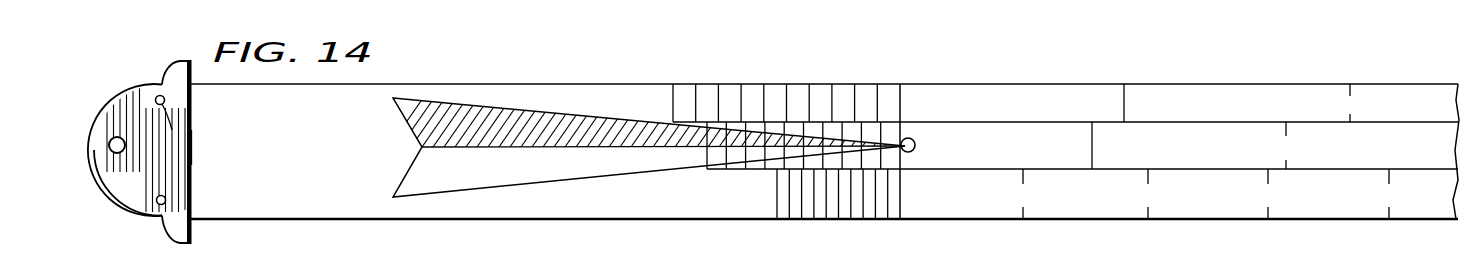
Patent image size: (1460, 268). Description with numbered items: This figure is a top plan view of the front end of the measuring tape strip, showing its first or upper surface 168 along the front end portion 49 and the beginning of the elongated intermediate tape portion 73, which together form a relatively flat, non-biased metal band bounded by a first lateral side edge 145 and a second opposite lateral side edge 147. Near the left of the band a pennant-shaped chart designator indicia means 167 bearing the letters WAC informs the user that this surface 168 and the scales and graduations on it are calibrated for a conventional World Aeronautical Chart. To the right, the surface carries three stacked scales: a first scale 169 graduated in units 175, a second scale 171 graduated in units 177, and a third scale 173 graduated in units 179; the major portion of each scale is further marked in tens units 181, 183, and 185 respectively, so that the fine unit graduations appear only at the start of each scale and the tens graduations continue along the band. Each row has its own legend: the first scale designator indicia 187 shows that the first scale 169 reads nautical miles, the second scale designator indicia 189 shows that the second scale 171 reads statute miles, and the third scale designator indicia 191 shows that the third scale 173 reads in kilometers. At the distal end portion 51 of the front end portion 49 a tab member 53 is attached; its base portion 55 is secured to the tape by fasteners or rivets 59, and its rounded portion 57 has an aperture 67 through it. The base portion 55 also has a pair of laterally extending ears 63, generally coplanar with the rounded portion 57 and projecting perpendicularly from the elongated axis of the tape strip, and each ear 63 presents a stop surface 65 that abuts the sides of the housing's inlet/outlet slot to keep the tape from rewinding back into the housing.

The front end portion 49 is at (825, 153).
The distal end portion 51 is at (192, 146).
The tab member 53 is at (130, 80).
The base portion 55 is at (192, 107).
The rounded portion 57 is at (137, 192).
The fasteners or rivets 59 is at (160, 196).
The laterally extending ears 63 is at (157, 73).
The stop surface 65 is at (193, 70).
The aperture 67 is at (113, 138).
The elongated intermediate tape portion 73 is at (1178, 78).
The first lateral side edge 145 is at (571, 66).
The second lateral side edge 147 is at (519, 221).
The chart designator indicia means 167 is at (588, 103).
The upper surface 168 is at (306, 156).
The first scale 169 is at (1049, 88).
The second scale 171 is at (1064, 125).
The third scale 173 is at (1089, 210).
The units graduations of first scale 175 is at (741, 83).
The units graduations of second scale 177 is at (726, 169).
The units graduations of third scale 179 is at (814, 219).
The tens units of first scale 181 is at (1128, 121).
The tens units of second scale 183 is at (1093, 166).
The tens units of third scale 185 is at (1150, 210).
The first scale designator indicia 187 is at (940, 74).
The second scale designator indicia 189 is at (1005, 143).
The third scale designator indicia 191 is at (962, 197).